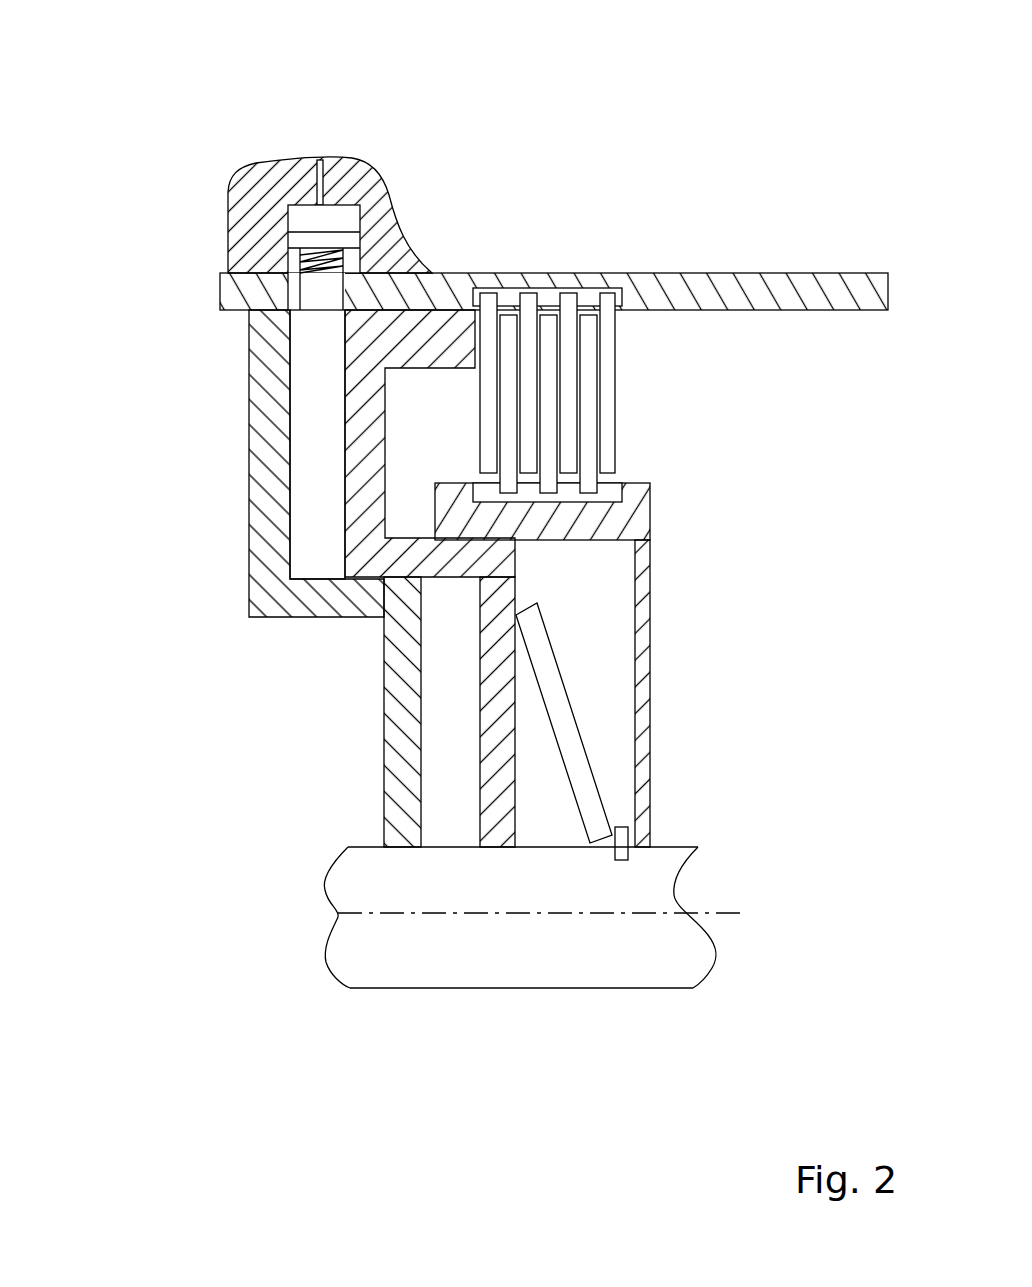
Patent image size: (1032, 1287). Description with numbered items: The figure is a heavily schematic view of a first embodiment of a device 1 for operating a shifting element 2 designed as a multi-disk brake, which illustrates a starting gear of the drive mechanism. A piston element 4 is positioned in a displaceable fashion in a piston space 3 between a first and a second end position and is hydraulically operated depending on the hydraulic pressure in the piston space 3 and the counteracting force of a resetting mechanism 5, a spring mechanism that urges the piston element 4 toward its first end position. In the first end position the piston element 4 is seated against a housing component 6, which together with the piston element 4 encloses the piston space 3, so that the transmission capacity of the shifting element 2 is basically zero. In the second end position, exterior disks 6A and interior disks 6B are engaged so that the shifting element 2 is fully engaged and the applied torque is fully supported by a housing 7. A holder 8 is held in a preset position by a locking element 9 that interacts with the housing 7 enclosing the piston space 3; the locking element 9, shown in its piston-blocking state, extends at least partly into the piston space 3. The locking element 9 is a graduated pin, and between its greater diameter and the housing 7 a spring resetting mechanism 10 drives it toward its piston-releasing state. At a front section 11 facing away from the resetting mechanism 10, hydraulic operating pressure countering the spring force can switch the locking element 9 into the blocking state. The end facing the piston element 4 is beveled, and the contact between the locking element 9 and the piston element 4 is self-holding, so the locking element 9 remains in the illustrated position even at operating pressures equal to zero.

The device 1 is at (169, 127).
The shifting element 2 is at (672, 405).
The piston space 3 is at (318, 462).
The piston element 4 is at (346, 373).
The resetting mechanism 5 is at (574, 704).
The housing component 6 is at (250, 592).
The exterior disks 6A is at (502, 272).
The interior disks 6B is at (536, 272).
The housing 7 is at (698, 274).
The holder 8 is at (304, 165).
The locking element 9 is at (346, 220).
The spring resetting mechanism 10 is at (300, 258).
The front section 11 is at (300, 163).